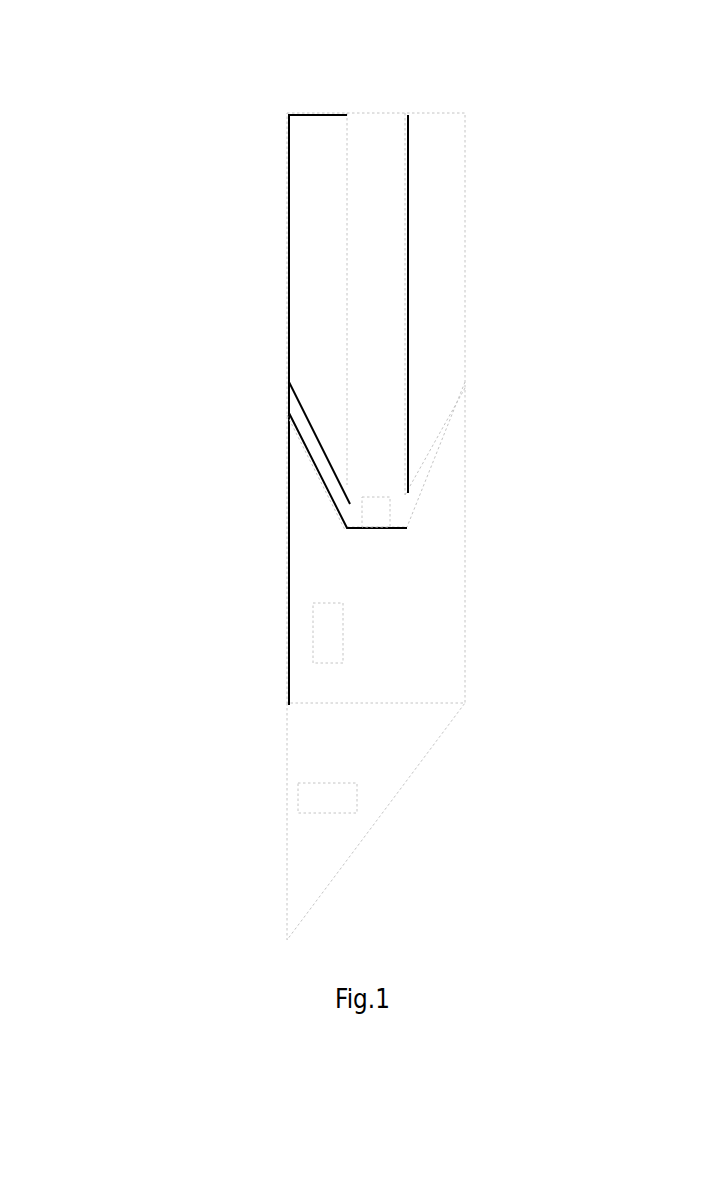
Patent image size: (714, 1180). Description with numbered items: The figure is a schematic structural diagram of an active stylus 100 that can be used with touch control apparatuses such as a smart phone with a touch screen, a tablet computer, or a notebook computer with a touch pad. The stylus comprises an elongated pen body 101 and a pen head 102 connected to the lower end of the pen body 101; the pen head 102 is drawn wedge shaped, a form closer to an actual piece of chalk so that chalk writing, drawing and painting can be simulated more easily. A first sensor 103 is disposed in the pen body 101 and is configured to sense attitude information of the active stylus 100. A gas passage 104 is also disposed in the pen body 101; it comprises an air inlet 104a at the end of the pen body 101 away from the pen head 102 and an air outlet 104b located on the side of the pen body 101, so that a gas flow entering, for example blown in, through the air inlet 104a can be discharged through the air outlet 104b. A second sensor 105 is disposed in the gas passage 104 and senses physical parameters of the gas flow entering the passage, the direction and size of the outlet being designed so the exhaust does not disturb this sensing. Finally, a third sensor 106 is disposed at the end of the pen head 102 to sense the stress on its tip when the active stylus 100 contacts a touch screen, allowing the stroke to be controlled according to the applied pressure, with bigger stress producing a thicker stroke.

The active stylus 100 is at (118, 107).
The pen body 101 is at (310, 270).
The pen head 102 is at (318, 750).
The first sensor 103 is at (328, 648).
The gas passage 104 is at (363, 158).
The air inlet 104a is at (362, 110).
The air outlet 104b is at (287, 398).
The second sensor 105 is at (383, 528).
The third sensor 106 is at (313, 807).